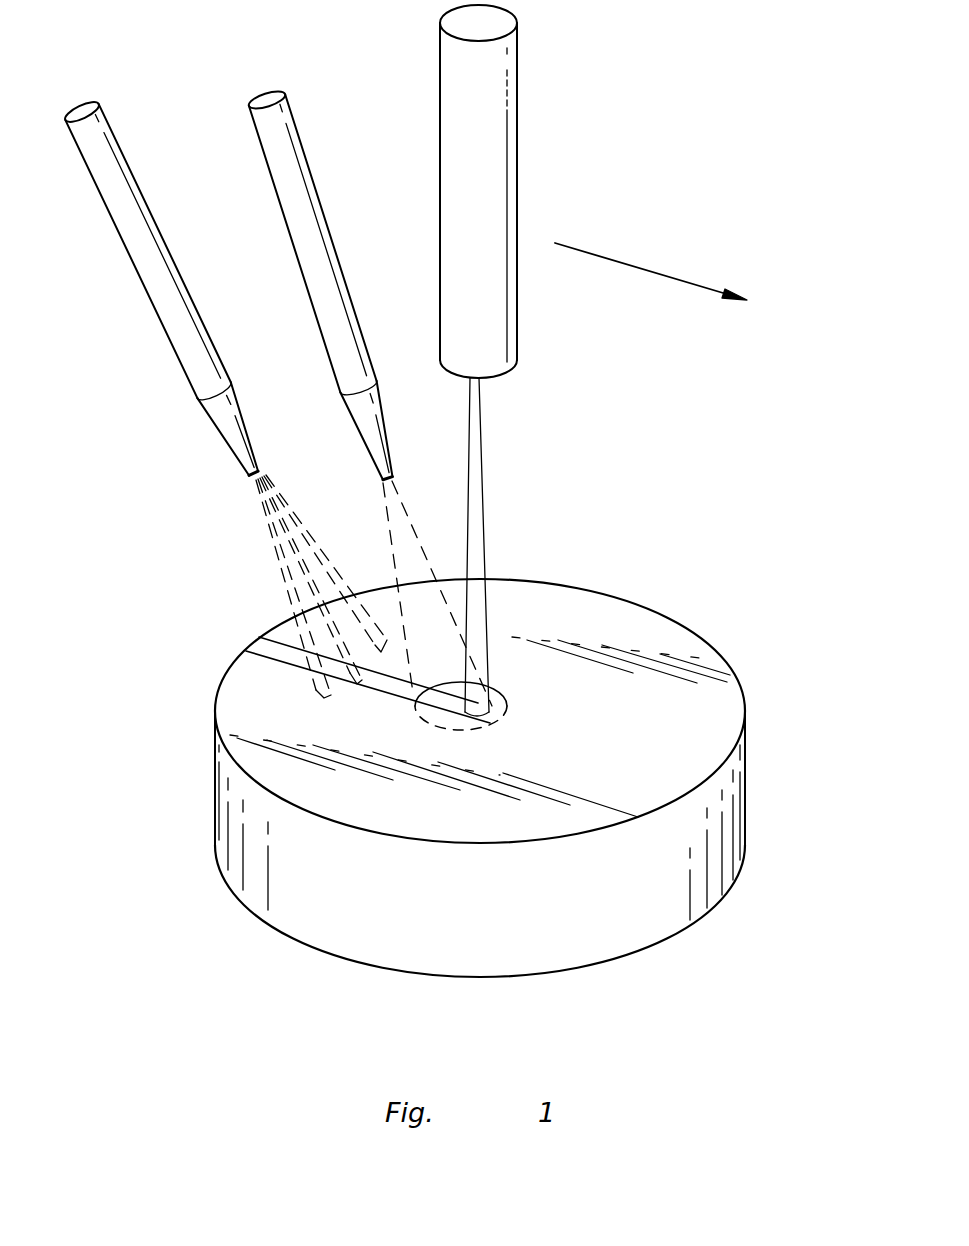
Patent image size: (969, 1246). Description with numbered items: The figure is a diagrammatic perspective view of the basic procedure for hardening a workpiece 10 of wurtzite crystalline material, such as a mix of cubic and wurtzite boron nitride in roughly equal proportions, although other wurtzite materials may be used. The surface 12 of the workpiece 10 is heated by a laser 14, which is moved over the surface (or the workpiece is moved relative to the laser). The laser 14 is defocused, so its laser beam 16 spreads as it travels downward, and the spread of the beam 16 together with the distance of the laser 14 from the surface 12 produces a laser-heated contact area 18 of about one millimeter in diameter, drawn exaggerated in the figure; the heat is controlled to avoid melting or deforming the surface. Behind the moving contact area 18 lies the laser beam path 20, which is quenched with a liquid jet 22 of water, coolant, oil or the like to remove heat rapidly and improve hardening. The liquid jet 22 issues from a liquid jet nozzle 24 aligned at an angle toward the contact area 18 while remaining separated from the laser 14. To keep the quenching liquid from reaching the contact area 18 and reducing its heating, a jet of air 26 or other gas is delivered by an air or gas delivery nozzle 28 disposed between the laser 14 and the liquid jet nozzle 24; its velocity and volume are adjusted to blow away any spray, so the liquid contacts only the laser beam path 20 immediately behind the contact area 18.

The workpiece 10 is at (272, 925).
The surface 12 is at (619, 707).
The laser 14 is at (517, 108).
The laser beam 16 is at (482, 487).
The laser-heated contact area 18 is at (487, 722).
The laser beam path 20 is at (385, 698).
The liquid jet 22 is at (262, 519).
The liquid jet nozzle 24 is at (158, 318).
The jet of air 26 is at (388, 548).
The air or gas delivery nozzle 28 is at (286, 224).